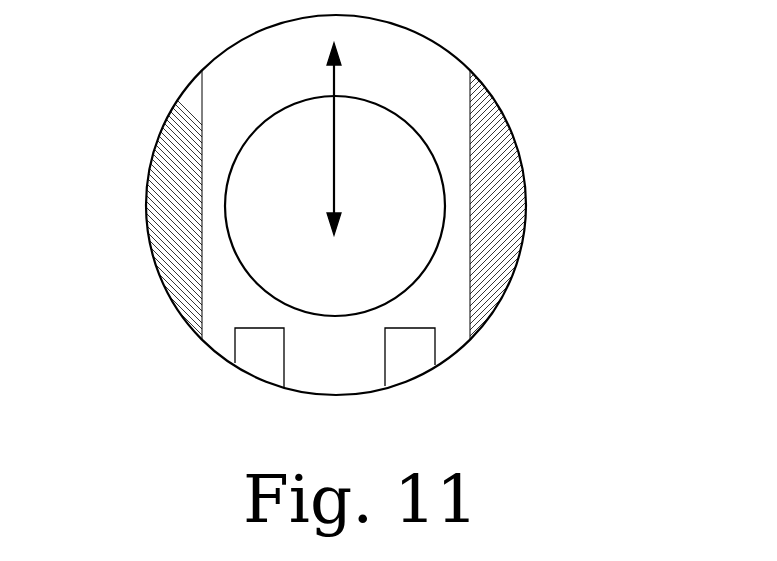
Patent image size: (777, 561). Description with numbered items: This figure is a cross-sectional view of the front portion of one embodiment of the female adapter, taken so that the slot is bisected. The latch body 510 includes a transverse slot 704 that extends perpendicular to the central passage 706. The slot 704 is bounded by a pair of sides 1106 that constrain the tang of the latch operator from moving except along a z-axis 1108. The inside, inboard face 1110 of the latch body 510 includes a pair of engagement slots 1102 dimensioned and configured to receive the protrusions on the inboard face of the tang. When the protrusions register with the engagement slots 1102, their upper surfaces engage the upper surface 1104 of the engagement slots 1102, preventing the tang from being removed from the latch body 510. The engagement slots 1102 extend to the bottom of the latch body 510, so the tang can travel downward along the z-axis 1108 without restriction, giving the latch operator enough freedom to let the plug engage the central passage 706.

The latch body 510 is at (350, 222).
The transverse slot 704 is at (262, 110).
The central passage 706 is at (423, 213).
The engagement slots 1102 is at (256, 378).
The upper surface of the engagement slots 1104 is at (256, 328).
The sides 1106 is at (147, 205).
The z-axis 1108 is at (337, 125).
The inside, inboard face 1110 is at (345, 366).